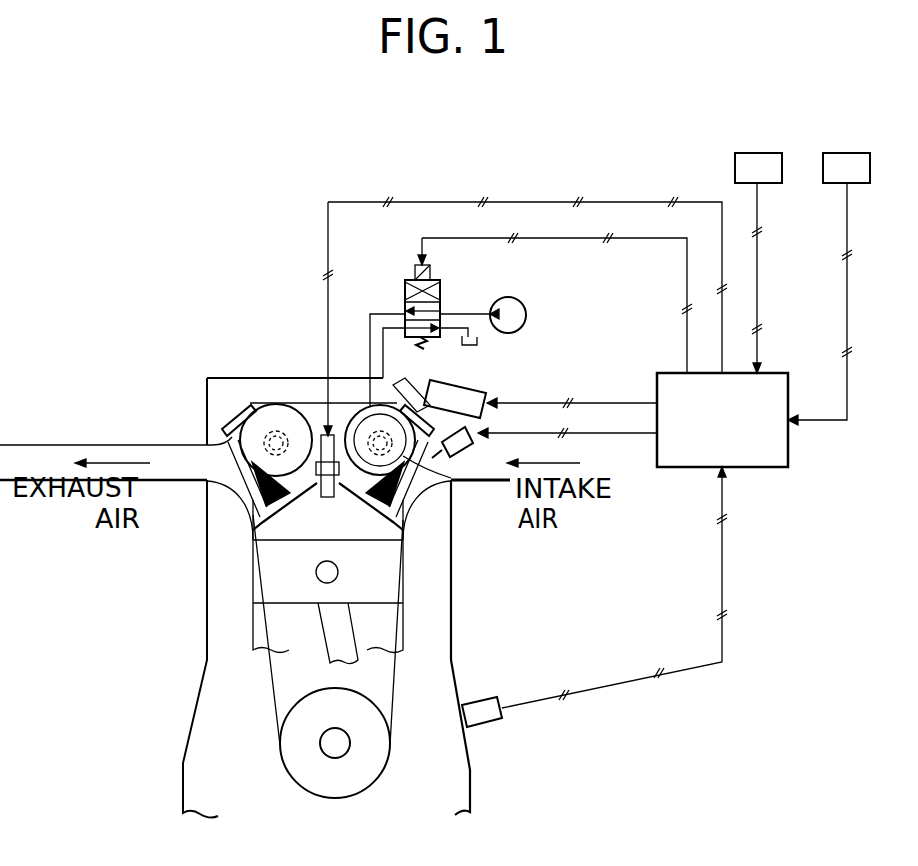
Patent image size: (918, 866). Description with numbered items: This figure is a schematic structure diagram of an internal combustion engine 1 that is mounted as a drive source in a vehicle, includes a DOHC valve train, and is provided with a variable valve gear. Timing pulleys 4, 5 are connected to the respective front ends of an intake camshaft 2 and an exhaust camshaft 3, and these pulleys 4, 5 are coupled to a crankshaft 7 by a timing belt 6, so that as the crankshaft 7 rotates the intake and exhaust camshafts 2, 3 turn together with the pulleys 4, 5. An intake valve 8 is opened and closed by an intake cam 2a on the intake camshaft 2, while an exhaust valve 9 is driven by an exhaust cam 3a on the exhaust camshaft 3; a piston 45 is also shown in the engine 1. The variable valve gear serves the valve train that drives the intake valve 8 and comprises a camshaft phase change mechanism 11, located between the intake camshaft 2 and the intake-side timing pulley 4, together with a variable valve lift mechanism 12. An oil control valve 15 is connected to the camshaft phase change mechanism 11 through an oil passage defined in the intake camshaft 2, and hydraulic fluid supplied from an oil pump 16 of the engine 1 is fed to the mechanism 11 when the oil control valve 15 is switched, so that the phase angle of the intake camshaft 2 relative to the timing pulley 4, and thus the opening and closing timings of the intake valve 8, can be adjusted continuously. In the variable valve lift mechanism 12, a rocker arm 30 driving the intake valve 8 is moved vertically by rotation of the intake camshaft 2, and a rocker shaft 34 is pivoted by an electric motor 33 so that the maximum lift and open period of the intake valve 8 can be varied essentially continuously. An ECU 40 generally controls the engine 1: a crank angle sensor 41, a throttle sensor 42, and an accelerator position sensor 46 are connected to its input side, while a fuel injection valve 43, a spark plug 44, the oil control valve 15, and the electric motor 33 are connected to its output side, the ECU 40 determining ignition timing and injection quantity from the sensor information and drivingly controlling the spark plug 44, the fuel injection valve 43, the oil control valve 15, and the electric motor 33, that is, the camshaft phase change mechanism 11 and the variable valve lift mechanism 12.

The engine 1 is at (150, 680).
The intake camshaft 2 is at (367, 410).
The intake cam 2a is at (370, 433).
The exhaust camshaft 3 is at (275, 437).
The exhaust cam 3a is at (293, 437).
The timing pulley 4 is at (395, 483).
The timing pulley 5 is at (260, 403).
The timing belt 6 is at (400, 685).
The crankshaft 7 is at (320, 750).
The intake valve 8 is at (410, 500).
The exhaust valve 9 is at (272, 500).
The camshaft phase change mechanism 11 is at (445, 483).
The variable valve lift mechanism 12 is at (522, 355).
The oil control valve 15 is at (442, 281).
The oil pump 16 is at (527, 304).
The rocker arm 30 is at (487, 393).
The electric motor 33 is at (458, 382).
The rocker shaft 34 is at (397, 407).
The ECU 40 is at (668, 373).
The crank angle sensor 41 is at (497, 726).
The throttle sensor 42 is at (748, 150).
The fuel injection valve 43 is at (480, 428).
The spark plug 44 is at (323, 433).
The piston 45 is at (383, 533).
The accelerator position sensor 46 is at (837, 150).